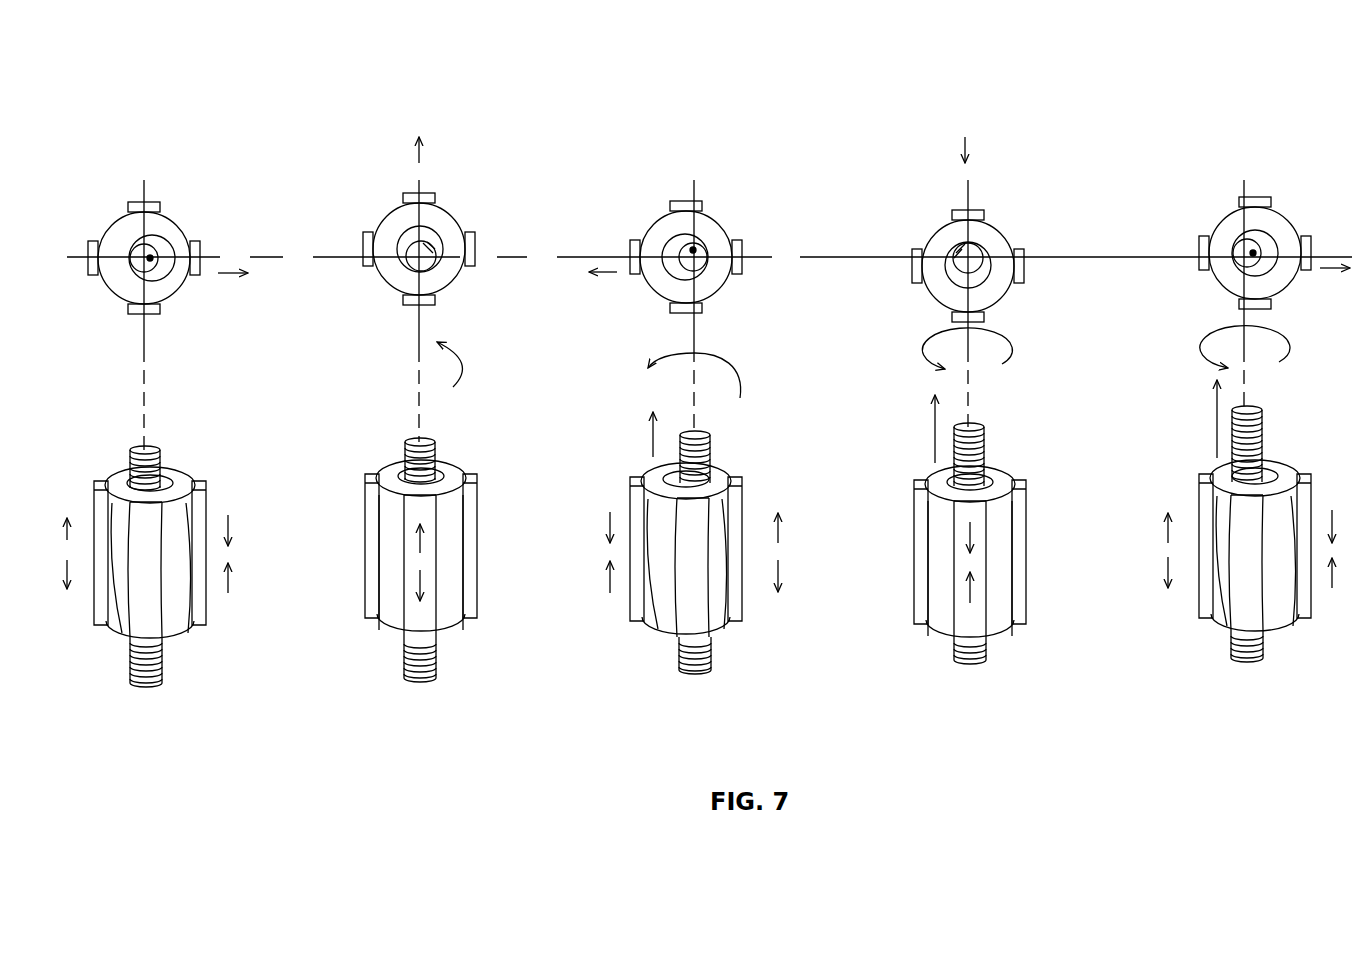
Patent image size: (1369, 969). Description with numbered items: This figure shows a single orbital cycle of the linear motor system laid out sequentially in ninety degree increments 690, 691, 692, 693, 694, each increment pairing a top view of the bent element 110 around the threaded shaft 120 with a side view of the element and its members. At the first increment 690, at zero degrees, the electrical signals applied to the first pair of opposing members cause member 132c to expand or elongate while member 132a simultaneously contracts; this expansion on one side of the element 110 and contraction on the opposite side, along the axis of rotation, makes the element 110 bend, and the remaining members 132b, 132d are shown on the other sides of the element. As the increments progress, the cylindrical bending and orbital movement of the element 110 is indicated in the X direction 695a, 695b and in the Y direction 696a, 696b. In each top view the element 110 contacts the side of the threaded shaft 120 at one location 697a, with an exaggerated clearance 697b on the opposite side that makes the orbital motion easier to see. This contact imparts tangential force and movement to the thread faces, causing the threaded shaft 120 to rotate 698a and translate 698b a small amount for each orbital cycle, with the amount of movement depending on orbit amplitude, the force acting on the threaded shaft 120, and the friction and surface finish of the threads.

The element 110 is at (173, 603).
The threaded shaft 120 is at (160, 673).
The member 132a is at (198, 478).
The central column 132b is at (140, 603).
The member 132c is at (108, 478).
The upper threaded post 132d is at (160, 457).
The first ninety degree increment 690 is at (170, 66).
The 90 degree position view 691 is at (424, 66).
The ninety degree increment 692 is at (705, 66).
The 270 degree position view 693 is at (967, 67).
The ninety degree increment 694 is at (1247, 67).
The X direction 695a is at (248, 298).
The X direction 695b is at (600, 308).
The Y direction 696a is at (473, 153).
The Y direction 696b is at (1008, 153).
The contact location 697a is at (130, 240).
The clearance 697b is at (173, 240).
The rotation 698a is at (1203, 345).
The translation 698b is at (1215, 413).